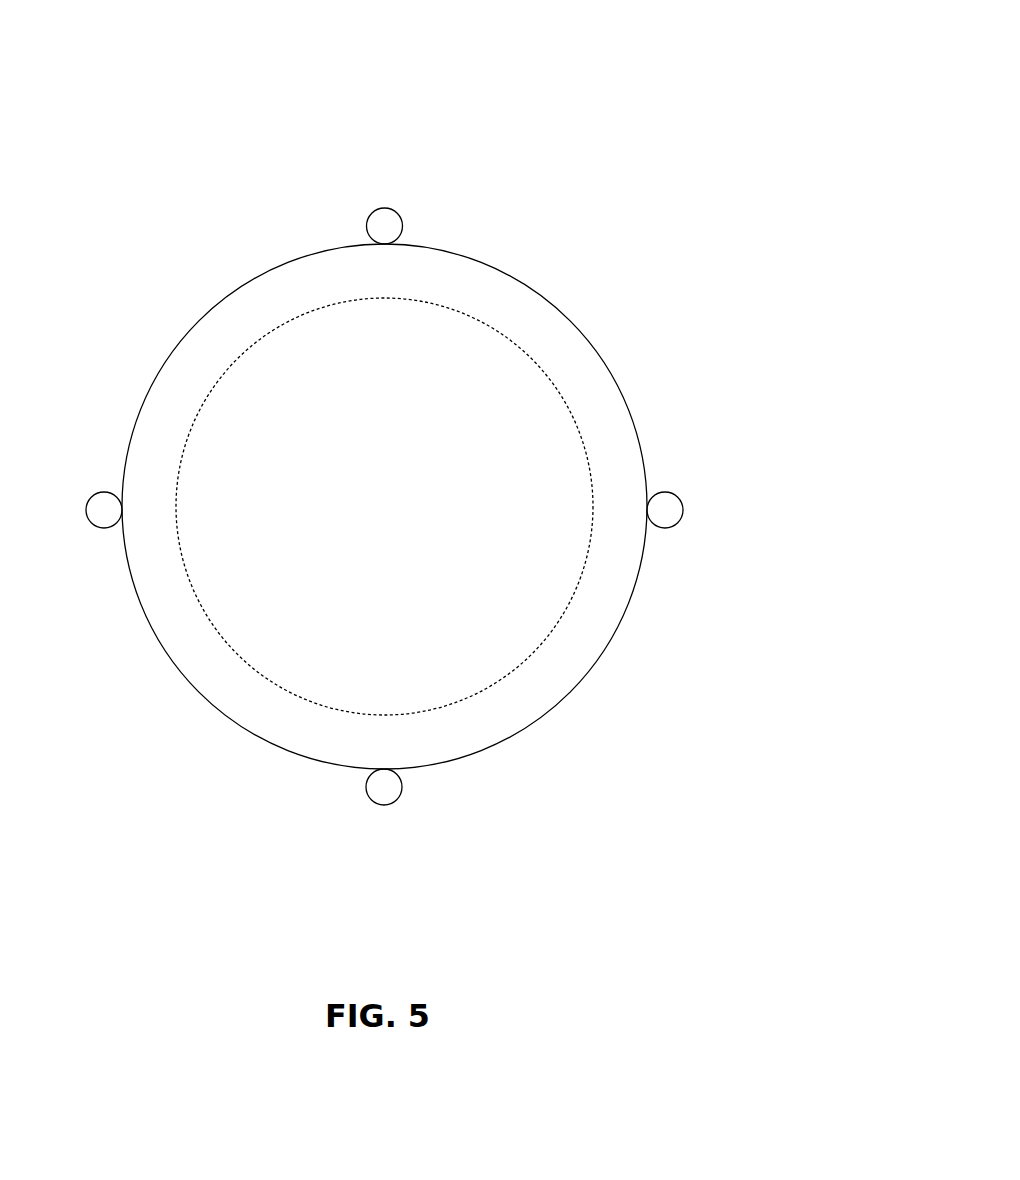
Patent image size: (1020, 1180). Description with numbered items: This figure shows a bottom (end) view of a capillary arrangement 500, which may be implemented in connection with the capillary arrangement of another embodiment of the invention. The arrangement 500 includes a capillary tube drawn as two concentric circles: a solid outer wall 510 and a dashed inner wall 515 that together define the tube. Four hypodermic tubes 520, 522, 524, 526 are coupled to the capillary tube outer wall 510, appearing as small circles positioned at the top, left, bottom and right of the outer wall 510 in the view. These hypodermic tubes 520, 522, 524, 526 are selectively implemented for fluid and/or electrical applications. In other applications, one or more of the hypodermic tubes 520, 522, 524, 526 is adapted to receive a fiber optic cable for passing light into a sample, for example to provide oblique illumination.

The capillary arrangement 500 is at (594, 41).
The outer wall 510 is at (517, 277).
The inner wall 515 is at (505, 337).
The hypodermic tube 520 is at (385, 208).
The hypodermic tube 522 is at (86, 511).
The hypodermic tube 524 is at (383, 805).
The hypodermic tube 526 is at (683, 510).